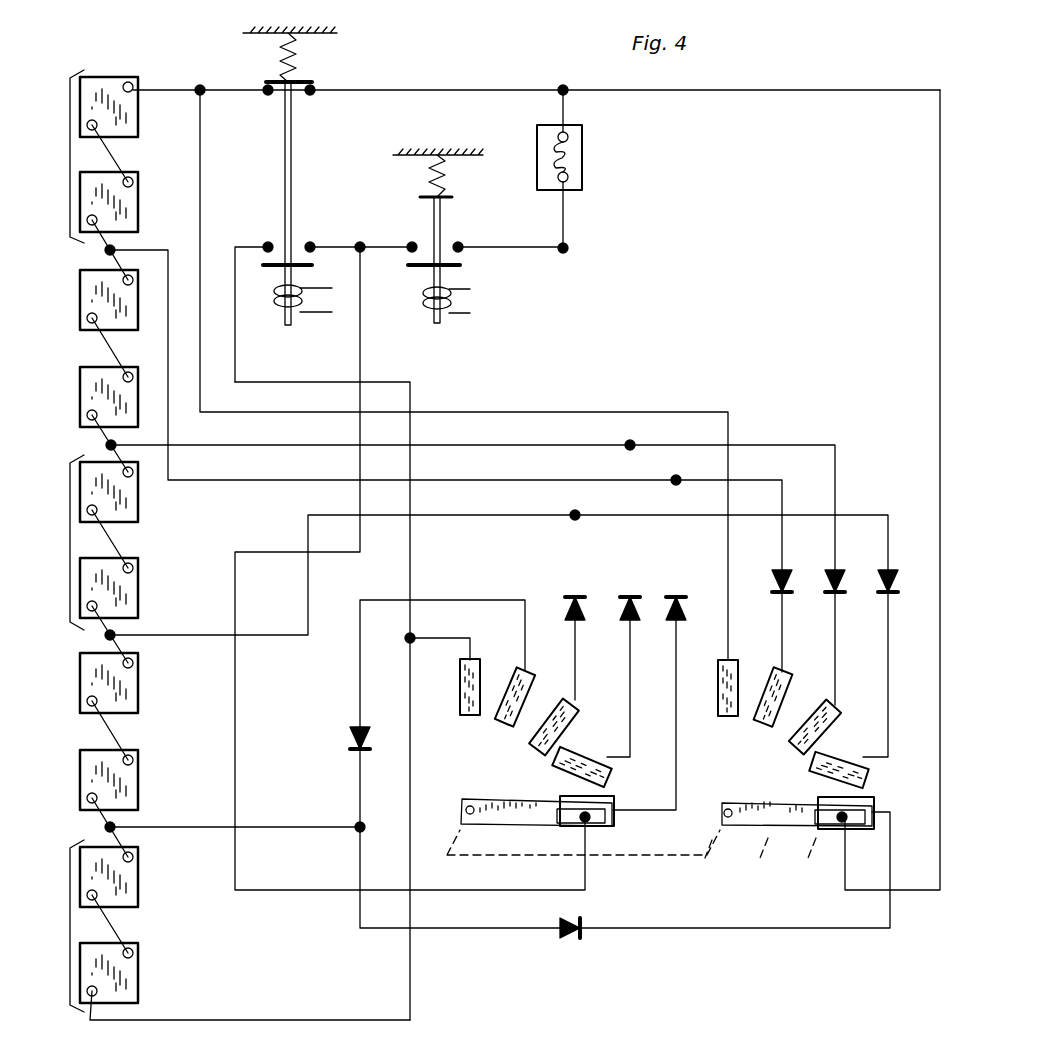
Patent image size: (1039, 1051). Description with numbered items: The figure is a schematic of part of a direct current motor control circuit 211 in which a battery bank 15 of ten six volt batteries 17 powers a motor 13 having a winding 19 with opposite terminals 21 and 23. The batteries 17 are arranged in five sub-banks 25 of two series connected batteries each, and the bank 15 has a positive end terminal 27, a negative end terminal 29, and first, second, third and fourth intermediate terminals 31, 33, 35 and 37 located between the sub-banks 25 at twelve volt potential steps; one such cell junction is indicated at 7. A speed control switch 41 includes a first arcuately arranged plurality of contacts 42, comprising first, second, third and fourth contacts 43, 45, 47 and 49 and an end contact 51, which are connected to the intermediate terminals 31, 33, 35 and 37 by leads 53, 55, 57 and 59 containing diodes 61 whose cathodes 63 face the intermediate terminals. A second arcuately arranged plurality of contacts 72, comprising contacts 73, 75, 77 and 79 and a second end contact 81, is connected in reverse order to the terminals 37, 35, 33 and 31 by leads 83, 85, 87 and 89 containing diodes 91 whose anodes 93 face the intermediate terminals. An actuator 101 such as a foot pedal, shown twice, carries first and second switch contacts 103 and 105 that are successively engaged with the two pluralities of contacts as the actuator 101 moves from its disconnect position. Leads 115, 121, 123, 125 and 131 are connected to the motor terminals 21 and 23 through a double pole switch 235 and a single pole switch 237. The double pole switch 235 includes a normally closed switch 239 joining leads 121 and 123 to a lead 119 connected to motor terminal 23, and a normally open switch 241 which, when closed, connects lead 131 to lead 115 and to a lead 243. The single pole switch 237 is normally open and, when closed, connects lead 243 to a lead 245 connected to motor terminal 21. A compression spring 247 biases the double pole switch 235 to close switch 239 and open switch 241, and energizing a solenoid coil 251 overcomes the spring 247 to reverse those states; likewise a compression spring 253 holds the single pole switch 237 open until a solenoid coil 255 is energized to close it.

The battery cell connection 7 is at (130, 338).
The motor 13 is at (588, 155).
The battery bank 15 is at (113, 525).
The batteries 17 is at (132, 122).
The winding 19 is at (576, 144).
The motor terminal 21 is at (570, 250).
The motor terminal 23 is at (570, 76).
The sub-banks 25 is at (68, 154).
The positive end terminal 27 is at (130, 82).
The negative end terminal 29 is at (90, 1002).
The first intermediate terminal 31 is at (106, 251).
The second intermediate terminal 33 is at (106, 445).
The third intermediate terminal 35 is at (106, 636).
The fourth intermediate terminal 37 is at (106, 827).
The speed control switch 41 is at (720, 894).
The first arcuately arranged plurality of contacts 42 is at (641, 750).
The first contact 43 is at (602, 809).
The second contact 45 is at (554, 774).
The third contact 47 is at (540, 738).
The fourth contact 49 is at (498, 724).
The last or end contact 51 is at (460, 682).
The lead 53 is at (684, 760).
The lead 55 is at (632, 712).
The lead 57 is at (590, 666).
The lead 59 is at (516, 580).
The diodes 61 is at (346, 735).
The cathodes 63 is at (348, 750).
The second arcuately arranged plurality of contacts 72 is at (799, 744).
The first contact 73 is at (848, 822).
The second contact 75 is at (814, 776).
The third contact 77 is at (794, 738).
The fourth contact 79 is at (758, 722).
The second last or end contact 81 is at (732, 662).
The lead 83 is at (850, 936).
The lead 85 is at (888, 694).
The lead 87 is at (836, 662).
The lead 89 is at (784, 642).
The diodes 91 is at (820, 612).
The anodes 93 is at (828, 576).
The actuator 101 is at (556, 834).
The first switch contact 103 is at (598, 822).
The second switch contact 105 is at (840, 830).
The lead 115 is at (244, 552).
The lead 119 is at (480, 92).
The lead 121 is at (200, 158).
The lead 123 is at (178, 84).
The lead 125 is at (806, 92).
The lead 131 is at (309, 352).
The control circuit 211 is at (482, 964).
The double pole switch 235 is at (317, 204).
The single pole switch 237 is at (482, 248).
The normally closed switch 239 is at (312, 94).
The normally open switch 241 is at (266, 242).
The lead 243 is at (385, 226).
The lead 245 is at (510, 227).
The compression spring 247 is at (298, 44).
The solenoid coil 251 is at (291, 328).
The compression spring 253 is at (445, 182).
The solenoid coil 255 is at (456, 312).